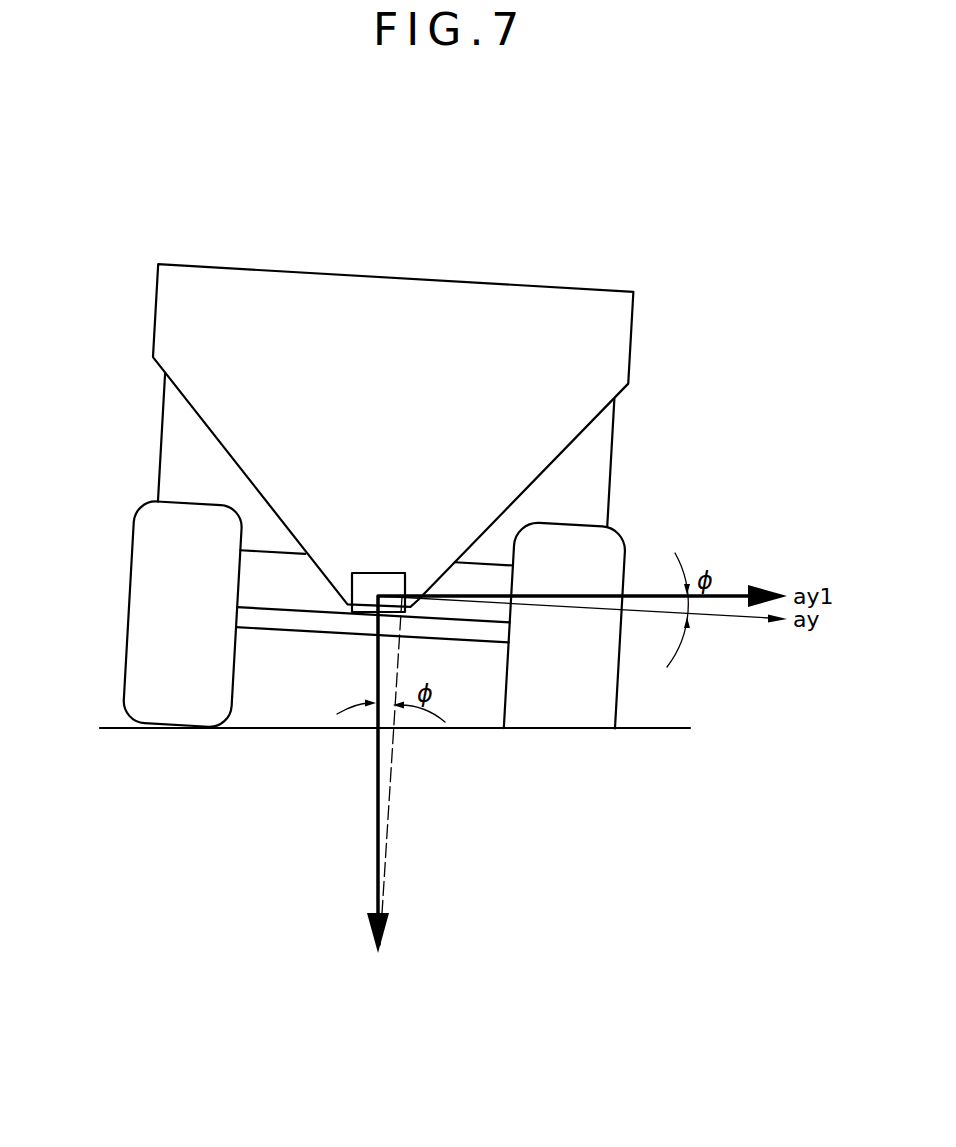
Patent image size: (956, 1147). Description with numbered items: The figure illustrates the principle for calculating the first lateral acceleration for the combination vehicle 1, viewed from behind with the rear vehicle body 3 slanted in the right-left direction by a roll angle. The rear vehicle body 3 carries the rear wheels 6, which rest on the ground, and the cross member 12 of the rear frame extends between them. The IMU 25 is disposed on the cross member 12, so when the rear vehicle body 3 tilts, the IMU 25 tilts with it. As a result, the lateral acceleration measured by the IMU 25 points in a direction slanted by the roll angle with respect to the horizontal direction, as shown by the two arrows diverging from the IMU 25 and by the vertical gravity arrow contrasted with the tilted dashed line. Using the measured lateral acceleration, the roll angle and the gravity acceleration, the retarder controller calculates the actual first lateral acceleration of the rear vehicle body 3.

The combination vehicle 1 is at (654, 162).
The rear vehicle body 3 is at (620, 327).
The rear wheels 6 is at (138, 594).
The cross member 12 is at (289, 640).
The IMU 25 is at (383, 578).